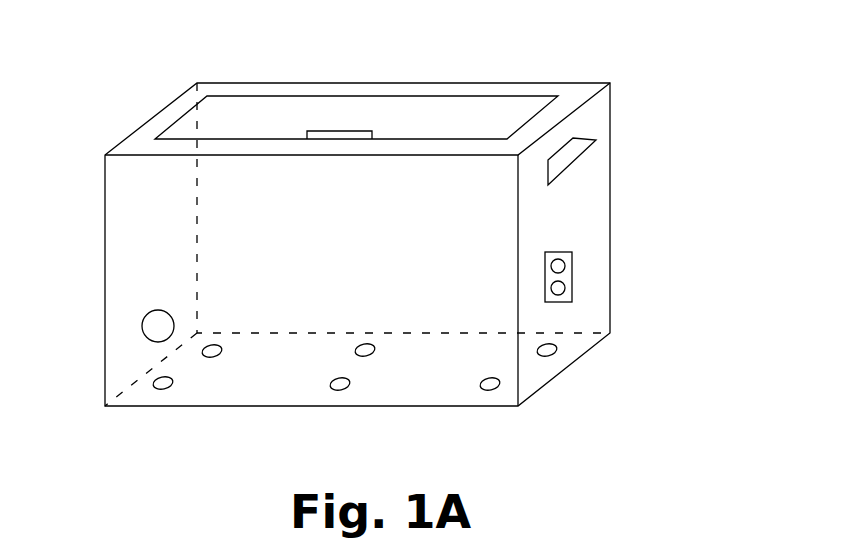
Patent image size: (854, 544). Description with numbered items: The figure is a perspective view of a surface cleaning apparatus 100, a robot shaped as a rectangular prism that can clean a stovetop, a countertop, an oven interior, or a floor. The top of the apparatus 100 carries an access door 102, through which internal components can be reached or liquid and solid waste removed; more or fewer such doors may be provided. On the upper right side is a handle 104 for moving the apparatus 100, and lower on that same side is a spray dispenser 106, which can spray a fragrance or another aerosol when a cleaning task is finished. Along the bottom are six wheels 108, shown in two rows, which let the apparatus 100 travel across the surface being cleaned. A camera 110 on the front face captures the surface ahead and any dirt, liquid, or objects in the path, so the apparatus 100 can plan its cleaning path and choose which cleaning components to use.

The surface cleaning apparatus 100 is at (572, 82).
The access door 102 is at (398, 113).
The handle 104 is at (588, 147).
The spray dispenser 106 is at (572, 283).
The wheels 108 is at (355, 350).
The camera 110 is at (142, 325).